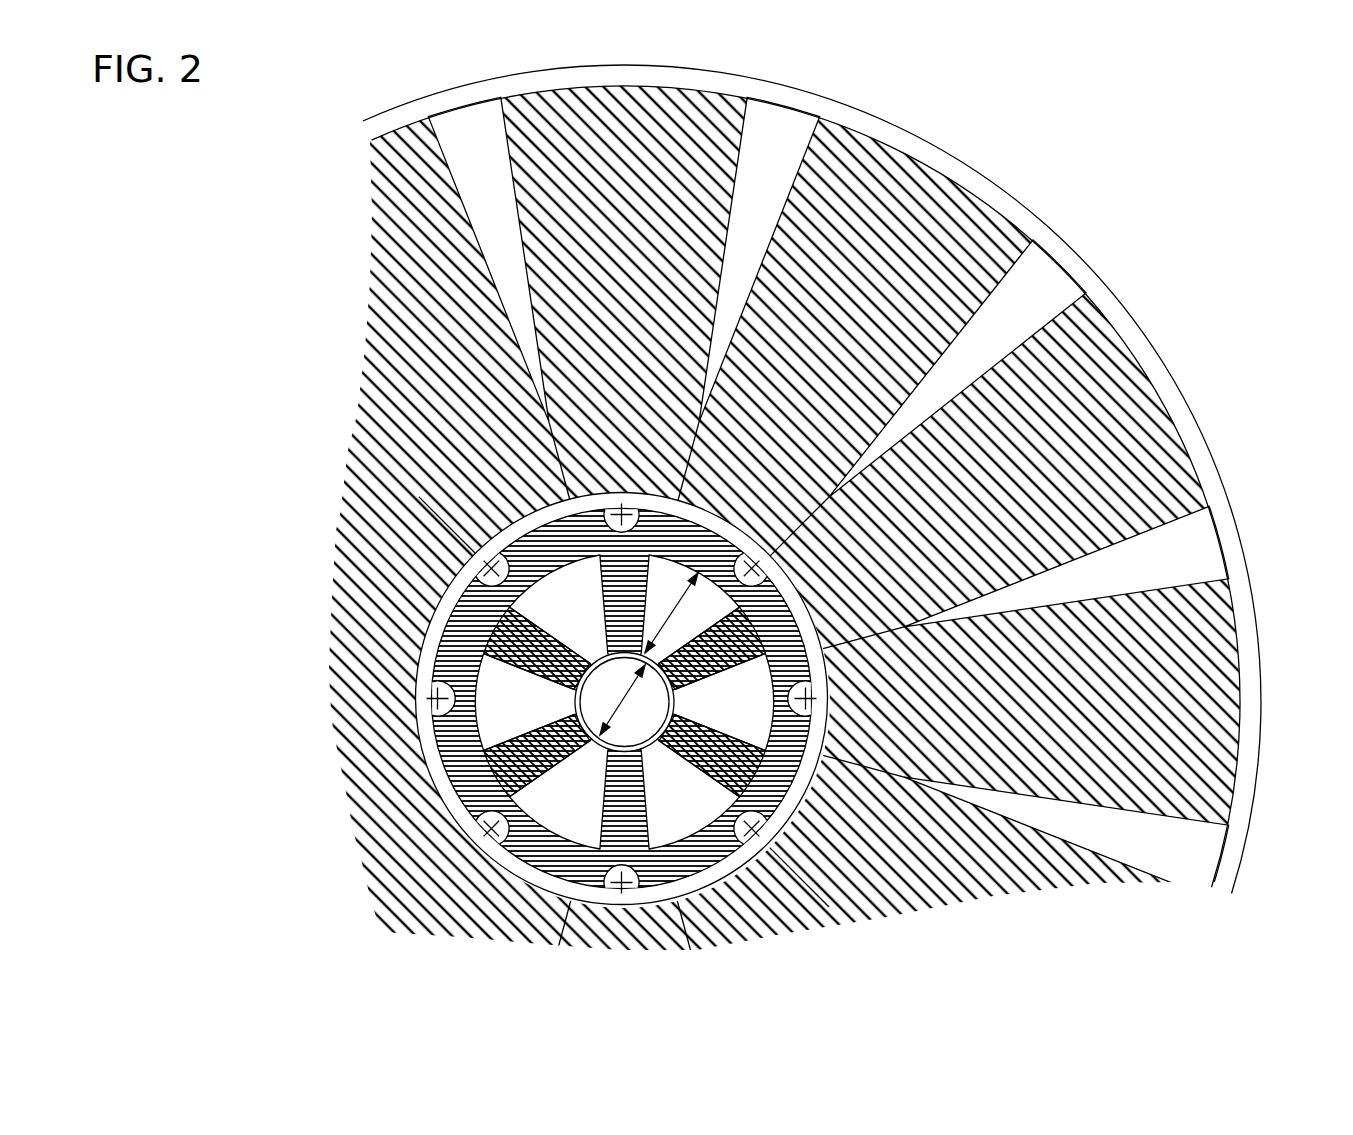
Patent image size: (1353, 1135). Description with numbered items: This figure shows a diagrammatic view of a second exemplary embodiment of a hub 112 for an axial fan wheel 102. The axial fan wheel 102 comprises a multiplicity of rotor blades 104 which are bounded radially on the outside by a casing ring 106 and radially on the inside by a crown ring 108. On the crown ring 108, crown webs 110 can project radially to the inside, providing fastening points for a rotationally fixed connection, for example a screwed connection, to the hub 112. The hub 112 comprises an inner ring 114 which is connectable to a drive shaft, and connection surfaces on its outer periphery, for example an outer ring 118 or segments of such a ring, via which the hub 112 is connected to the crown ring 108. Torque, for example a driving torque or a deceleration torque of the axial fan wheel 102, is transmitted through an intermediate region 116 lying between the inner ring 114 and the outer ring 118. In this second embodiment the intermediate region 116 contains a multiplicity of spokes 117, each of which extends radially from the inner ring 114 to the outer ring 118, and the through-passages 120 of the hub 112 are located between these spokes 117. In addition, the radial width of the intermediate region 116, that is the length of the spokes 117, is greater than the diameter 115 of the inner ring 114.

The axial fan wheel 102 is at (1218, 216).
The rotor blades 104 is at (421, 363).
The casing ring 106 is at (1197, 449).
The crown ring 108 is at (421, 680).
The crown webs 110 is at (459, 578).
The hub 112 is at (429, 637).
The inner ring 114 is at (648, 750).
The diameter 115 is at (615, 703).
The intermediate region 116 is at (645, 591).
The spokes 117 is at (427, 648).
The outer ring 118 is at (505, 723).
The through-passages 120 is at (552, 802).